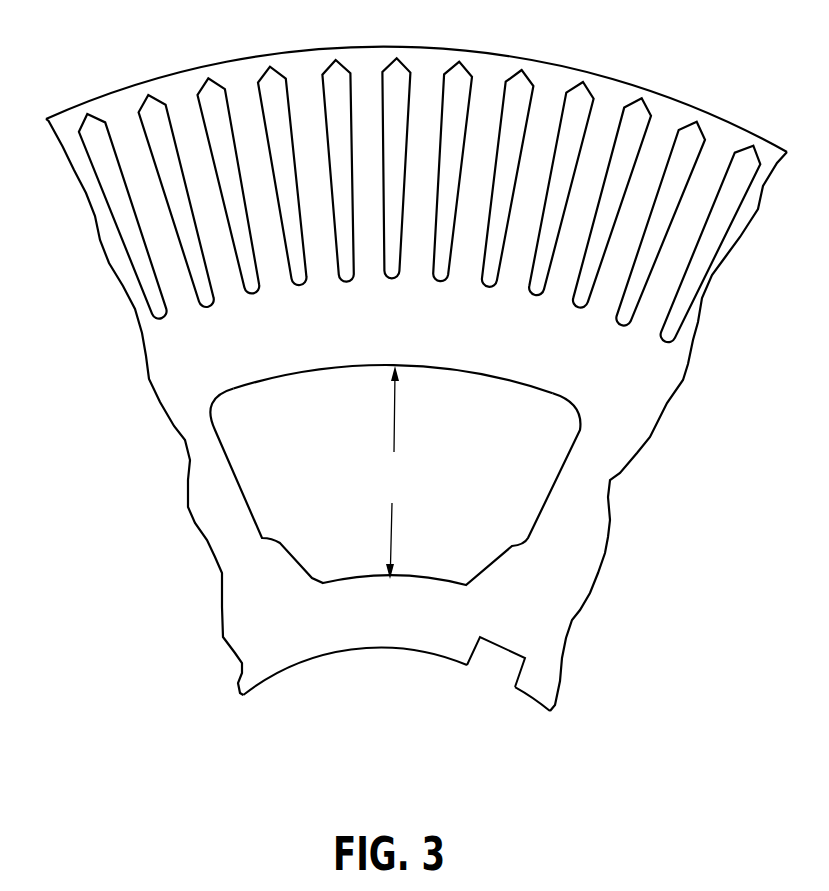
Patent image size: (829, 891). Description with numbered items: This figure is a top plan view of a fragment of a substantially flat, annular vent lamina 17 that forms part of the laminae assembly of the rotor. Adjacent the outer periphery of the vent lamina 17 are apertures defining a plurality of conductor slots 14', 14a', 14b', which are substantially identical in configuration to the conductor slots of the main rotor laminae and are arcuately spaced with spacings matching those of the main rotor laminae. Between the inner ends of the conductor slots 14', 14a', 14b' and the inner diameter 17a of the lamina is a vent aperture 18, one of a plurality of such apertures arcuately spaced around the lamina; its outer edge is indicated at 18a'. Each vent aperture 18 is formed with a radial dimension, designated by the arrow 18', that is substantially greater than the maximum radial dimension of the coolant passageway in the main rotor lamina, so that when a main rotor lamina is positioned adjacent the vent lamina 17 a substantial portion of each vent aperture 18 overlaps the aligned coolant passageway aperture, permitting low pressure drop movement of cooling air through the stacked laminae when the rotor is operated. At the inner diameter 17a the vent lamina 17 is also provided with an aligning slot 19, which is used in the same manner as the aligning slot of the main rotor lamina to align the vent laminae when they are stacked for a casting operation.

The conductor slot 14' is at (280, 146).
The conductor slot 14a' is at (339, 144).
The conductor slot 14b' is at (412, 142).
The vent lamina 17 is at (553, 62).
The inner diameter 17a is at (373, 650).
The vent aperture 18 is at (395, 460).
The outer edge of opening 18a' is at (393, 365).
The radial dimension arrow 18' is at (397, 472).
The aligning slot 19 is at (497, 656).